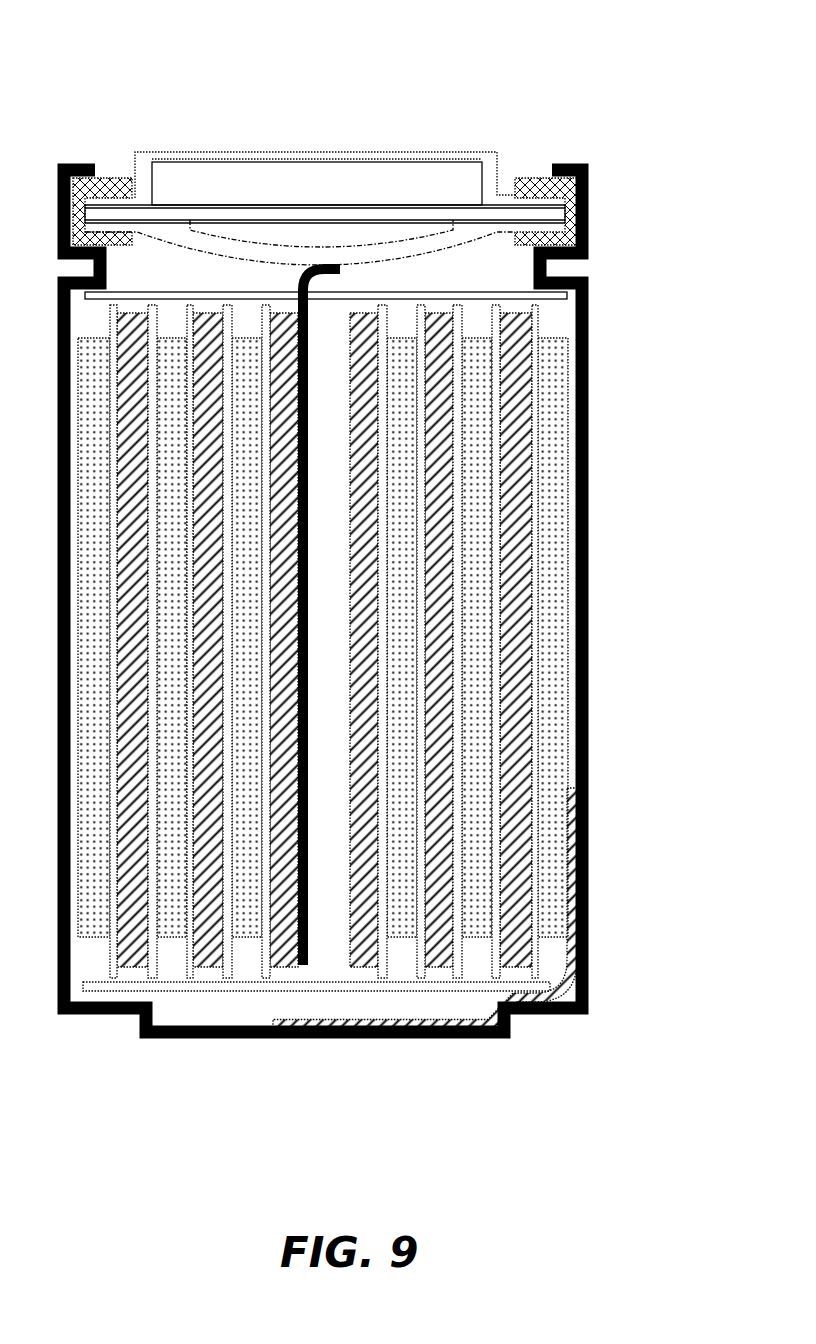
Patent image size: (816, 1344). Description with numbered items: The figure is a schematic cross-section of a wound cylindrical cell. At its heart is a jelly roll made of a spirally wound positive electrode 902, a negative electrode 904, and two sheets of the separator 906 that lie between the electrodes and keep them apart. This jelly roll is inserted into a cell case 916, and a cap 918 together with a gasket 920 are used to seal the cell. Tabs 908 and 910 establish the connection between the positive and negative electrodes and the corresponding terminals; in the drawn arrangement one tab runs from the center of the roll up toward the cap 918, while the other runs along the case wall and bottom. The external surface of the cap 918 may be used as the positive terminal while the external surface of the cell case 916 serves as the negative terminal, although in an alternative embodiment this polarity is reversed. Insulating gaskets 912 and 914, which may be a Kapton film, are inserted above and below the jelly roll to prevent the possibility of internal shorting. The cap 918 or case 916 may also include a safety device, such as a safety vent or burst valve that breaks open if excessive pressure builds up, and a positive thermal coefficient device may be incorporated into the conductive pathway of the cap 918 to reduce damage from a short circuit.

The positive electrode 902 is at (555, 665).
The negative electrode 904 is at (520, 510).
The separator 906 is at (530, 336).
The tab 908 is at (303, 283).
The tab 910 is at (560, 988).
The insulating gasket 912 is at (478, 292).
The insulating gasket 914 is at (440, 990).
The cell case 916 is at (213, 1040).
The cap 918 is at (403, 155).
The gasket 920 is at (540, 178).